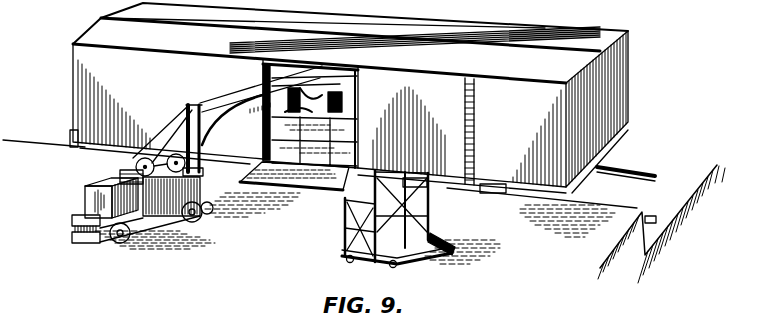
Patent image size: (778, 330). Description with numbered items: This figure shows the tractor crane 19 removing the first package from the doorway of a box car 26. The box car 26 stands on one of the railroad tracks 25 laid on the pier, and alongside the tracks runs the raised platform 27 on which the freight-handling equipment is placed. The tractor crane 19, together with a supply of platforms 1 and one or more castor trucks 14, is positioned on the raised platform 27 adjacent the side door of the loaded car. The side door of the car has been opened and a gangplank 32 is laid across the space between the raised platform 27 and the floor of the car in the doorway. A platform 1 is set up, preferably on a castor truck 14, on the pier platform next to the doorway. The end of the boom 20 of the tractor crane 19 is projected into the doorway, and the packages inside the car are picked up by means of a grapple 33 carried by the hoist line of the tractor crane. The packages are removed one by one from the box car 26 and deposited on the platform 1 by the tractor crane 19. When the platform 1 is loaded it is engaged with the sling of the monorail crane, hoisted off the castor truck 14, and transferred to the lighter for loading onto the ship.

The box car 26 is at (90, 33).
The grapple 33 is at (358, 117).
The boom 20 is at (250, 117).
The tractor crane 19 is at (163, 215).
The gangplank 32 is at (297, 188).
The platform 1 is at (433, 238).
The castor truck 14 is at (421, 253).
The railroad tracks 25 is at (650, 164).
The raised platform 27 is at (637, 208).